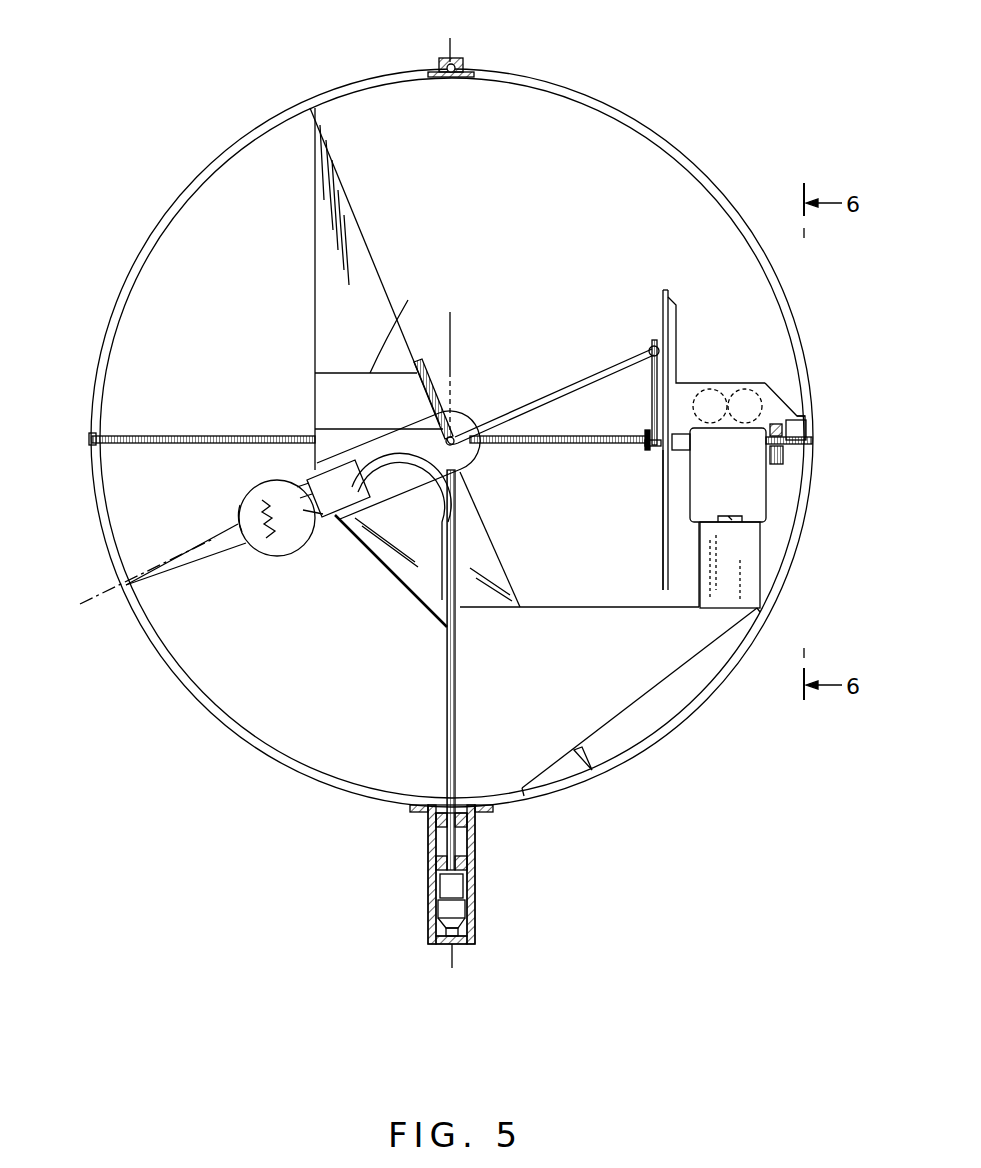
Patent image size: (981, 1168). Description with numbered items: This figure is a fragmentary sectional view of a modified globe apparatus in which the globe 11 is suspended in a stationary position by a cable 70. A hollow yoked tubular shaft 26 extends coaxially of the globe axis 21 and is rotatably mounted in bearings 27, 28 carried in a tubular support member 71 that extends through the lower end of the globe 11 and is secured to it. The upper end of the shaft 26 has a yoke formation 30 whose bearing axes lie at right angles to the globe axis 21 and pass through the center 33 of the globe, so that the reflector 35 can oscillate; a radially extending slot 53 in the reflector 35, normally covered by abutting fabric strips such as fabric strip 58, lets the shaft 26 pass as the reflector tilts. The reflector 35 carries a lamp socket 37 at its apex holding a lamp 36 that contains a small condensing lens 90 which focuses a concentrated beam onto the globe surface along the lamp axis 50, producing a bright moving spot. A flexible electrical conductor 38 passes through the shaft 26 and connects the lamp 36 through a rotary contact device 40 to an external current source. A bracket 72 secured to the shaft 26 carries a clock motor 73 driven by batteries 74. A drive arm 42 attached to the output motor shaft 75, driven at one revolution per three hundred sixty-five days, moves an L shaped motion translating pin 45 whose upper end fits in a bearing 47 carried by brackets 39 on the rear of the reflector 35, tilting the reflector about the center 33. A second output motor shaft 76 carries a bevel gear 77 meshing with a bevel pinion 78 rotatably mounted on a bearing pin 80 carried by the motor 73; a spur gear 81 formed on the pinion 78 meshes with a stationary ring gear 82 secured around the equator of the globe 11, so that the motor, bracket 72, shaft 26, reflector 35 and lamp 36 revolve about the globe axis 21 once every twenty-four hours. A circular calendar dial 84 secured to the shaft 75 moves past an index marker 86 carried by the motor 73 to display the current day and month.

The globe 11 is at (238, 134).
The cable 70 is at (452, 46).
The reflector 35 is at (318, 305).
The brackets 39 is at (456, 406).
The globe axis 21 is at (452, 322).
The bearing 47 is at (430, 374).
The L shaped motion translating pin 45 is at (555, 382).
The center of the globe 33 is at (464, 447).
The lamp socket 37 is at (334, 521).
The lamp 36 is at (300, 548).
The condensing lens 90 is at (252, 540).
The axis of the lamp 50 is at (207, 550).
The ring gear 82 is at (208, 436).
The flexible electrical conductor 38 is at (432, 486).
The tubular shaft 26 is at (445, 710).
The yoke formation 30 is at (458, 494).
The fabric strip 58 is at (430, 604).
The drive arm 42 is at (651, 410).
The index marker 86 is at (676, 302).
The calendar dial 84 is at (662, 519).
The clock motor 73 is at (768, 502).
The batteries 74 is at (730, 396).
The output motor shaft 75 is at (672, 446).
The bevel pinion 78 is at (792, 441).
The second output motor shaft 76 is at (776, 466).
The bevel gear 77 is at (780, 452).
The spur gear 81 is at (798, 436).
The bearing pin 80 is at (795, 428).
The bracket 72 is at (638, 702).
The slot 53 is at (576, 752).
The tubular support member 71 is at (478, 848).
The bearing 28 is at (432, 820).
The bearing 27 is at (436, 862).
The rotary contact device 40 is at (462, 922).